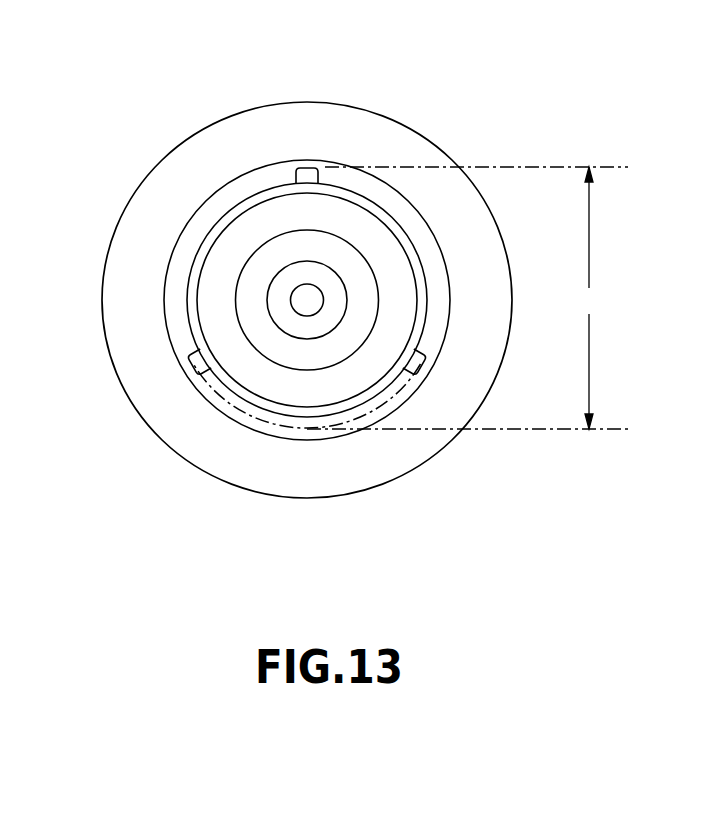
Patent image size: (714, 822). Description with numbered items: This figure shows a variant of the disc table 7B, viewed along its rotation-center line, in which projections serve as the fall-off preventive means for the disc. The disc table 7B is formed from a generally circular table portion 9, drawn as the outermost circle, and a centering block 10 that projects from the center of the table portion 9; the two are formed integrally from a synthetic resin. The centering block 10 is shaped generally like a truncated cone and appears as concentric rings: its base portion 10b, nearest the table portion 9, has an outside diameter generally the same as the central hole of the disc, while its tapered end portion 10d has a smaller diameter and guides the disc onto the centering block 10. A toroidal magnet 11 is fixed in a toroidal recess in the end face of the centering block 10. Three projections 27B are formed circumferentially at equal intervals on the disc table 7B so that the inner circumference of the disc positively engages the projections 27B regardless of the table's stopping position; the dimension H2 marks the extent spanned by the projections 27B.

The disc table 7B is at (490, 110).
The table portion 9 is at (390, 143).
The centering block 10 is at (265, 218).
The base portion 10b is at (438, 283).
The end portion 10d is at (203, 250).
The toroidal magnet 11 is at (253, 305).
The projections 27B is at (303, 167).
The height dimension H2 is at (467, 298).